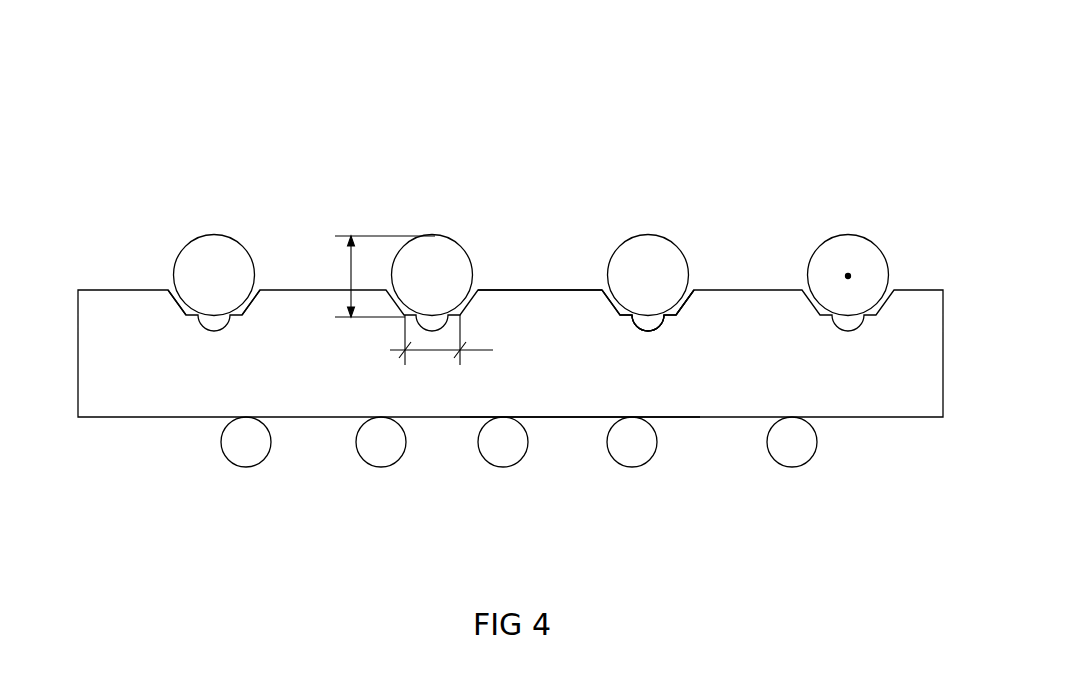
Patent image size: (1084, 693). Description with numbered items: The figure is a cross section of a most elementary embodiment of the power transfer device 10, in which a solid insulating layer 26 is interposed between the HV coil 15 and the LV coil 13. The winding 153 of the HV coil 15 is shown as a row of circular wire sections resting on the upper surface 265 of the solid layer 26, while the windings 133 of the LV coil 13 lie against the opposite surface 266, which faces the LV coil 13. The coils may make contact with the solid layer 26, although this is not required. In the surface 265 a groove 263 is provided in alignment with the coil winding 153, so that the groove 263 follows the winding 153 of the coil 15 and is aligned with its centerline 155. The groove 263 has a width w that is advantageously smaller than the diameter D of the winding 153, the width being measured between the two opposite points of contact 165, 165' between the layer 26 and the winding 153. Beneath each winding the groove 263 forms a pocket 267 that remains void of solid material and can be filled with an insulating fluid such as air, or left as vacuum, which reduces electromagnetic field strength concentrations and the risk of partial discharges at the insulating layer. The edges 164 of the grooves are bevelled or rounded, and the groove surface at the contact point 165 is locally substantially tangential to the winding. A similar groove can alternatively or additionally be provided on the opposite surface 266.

The power transfer device 10 is at (203, 125).
The LV coil 13 is at (571, 485).
The HV coil 15 is at (567, 213).
The solid insulating layer 26 is at (78, 390).
The windings of the LV coil 133 is at (257, 467).
The coil winding 153 is at (667, 235).
The centerline of the coil winding 155 is at (848, 276).
The edges of the grooves 164 is at (693, 298).
The point of contact 165 is at (137, 244).
The point of contact 165' is at (291, 244).
The groove 263 is at (628, 330).
The surface of solid layer 265 is at (520, 288).
The opposite surface 266 is at (572, 417).
The pocket 267 is at (648, 325).